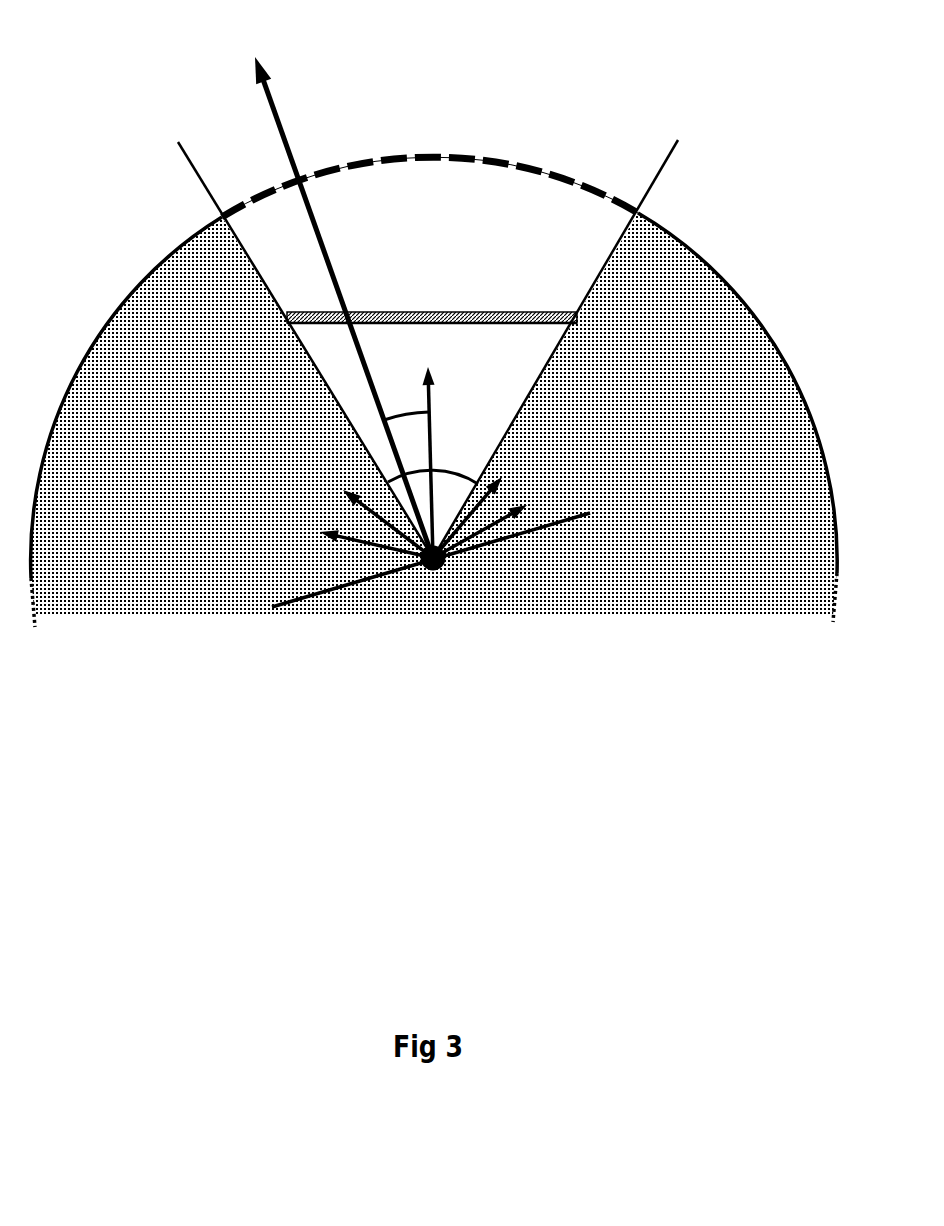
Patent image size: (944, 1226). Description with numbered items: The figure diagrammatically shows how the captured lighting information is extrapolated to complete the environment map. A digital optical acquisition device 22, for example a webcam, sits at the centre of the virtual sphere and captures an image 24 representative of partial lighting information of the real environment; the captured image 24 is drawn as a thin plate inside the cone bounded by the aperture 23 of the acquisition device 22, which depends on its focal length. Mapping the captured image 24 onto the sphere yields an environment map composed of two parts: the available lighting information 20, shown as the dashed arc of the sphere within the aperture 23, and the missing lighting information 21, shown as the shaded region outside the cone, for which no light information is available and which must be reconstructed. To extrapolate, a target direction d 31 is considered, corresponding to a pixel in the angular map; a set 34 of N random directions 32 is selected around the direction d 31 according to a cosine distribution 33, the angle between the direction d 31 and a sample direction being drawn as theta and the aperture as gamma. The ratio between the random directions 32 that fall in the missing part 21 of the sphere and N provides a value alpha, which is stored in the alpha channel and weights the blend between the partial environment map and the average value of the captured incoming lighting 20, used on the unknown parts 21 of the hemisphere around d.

The available lighting information 20 is at (387, 233).
The missing lighting information 21 is at (707, 532).
The digital optical acquisition device 22 is at (427, 570).
The aperture 23 is at (457, 477).
The captured image 24 is at (458, 312).
The direction d 31 is at (275, 127).
The random directions 32 is at (430, 397).
The cosine distribution 33 is at (390, 410).
The set of random directions 34 is at (343, 540).